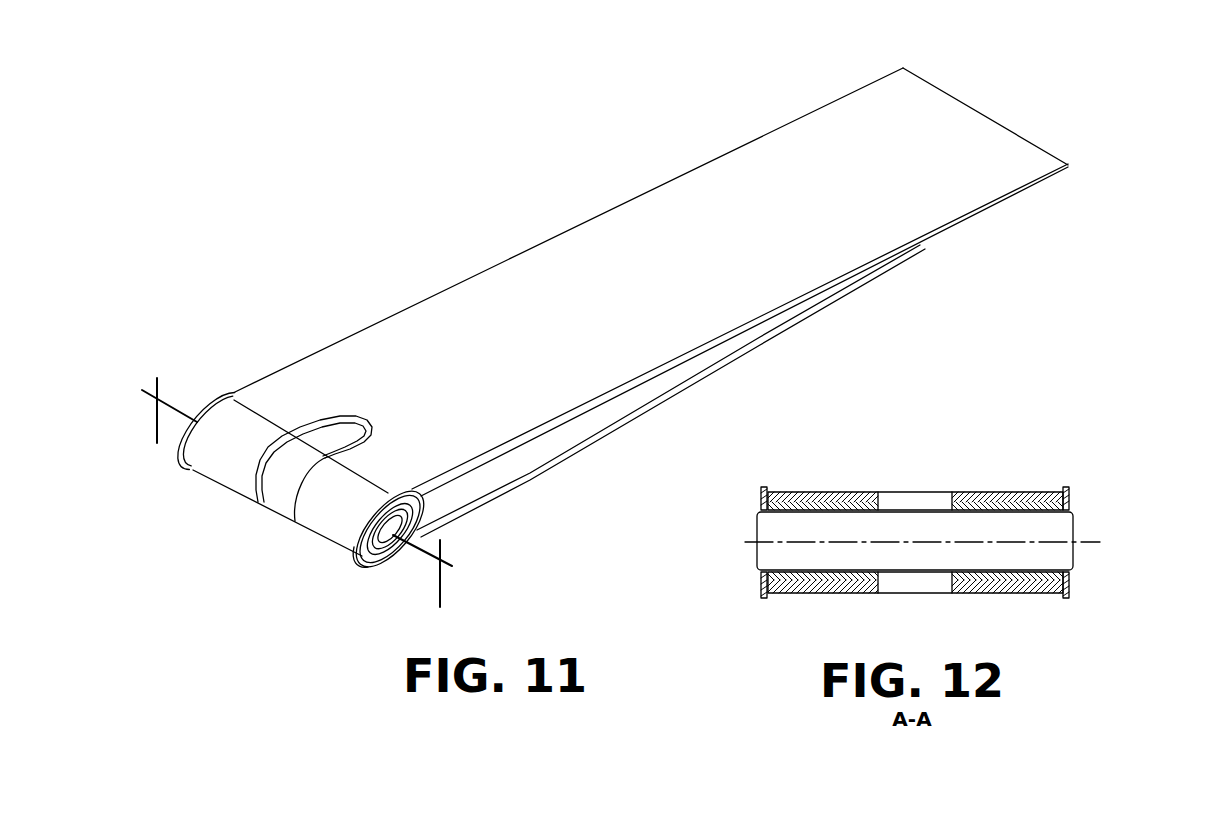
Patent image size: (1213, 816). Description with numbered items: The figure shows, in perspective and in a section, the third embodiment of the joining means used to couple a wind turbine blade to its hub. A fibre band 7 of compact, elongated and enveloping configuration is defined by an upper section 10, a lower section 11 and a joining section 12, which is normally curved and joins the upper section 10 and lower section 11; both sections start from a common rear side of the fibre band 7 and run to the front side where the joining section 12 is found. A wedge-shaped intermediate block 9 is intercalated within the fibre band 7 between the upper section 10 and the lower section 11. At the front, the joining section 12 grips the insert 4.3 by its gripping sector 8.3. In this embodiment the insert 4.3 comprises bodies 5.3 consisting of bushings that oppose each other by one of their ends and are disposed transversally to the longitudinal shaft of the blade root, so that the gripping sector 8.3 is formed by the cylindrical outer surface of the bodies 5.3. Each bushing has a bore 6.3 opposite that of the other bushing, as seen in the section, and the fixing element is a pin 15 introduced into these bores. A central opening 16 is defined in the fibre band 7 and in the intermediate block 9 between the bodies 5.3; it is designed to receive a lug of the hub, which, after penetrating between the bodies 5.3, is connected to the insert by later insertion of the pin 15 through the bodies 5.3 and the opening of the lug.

In FIG. 11, the insert 4.3 is at (186, 460).
In FIG. 12, the insert 4.3 is at (755, 606).
In FIG. 11, the elongated body 5.3 is at (381, 557).
In FIG. 12, the elongated body 5.3 is at (1070, 494).
In FIG. 12, the longitudinal bore 6.3 is at (817, 492).
In FIG. 11, the fibre band 7 is at (987, 223).
In FIG. 12, the fibre band 7 is at (1079, 462).
In FIG. 12, the gripping sector 8.3 is at (848, 498).
In FIG. 11, the intermediate block 9 is at (603, 410).
In FIG. 11, the upper section 10 is at (665, 222).
In FIG. 12, the upper section 10 is at (967, 492).
In FIG. 11, the lower section 11 is at (803, 318).
In FIG. 12, the lower section 11 is at (1018, 594).
In FIG. 11, the joining section 12 is at (335, 519).
In FIG. 11, the pin 15 is at (292, 492).
In FIG. 12, the pin 15 is at (1058, 552).
In FIG. 11, the central opening 16 is at (332, 433).